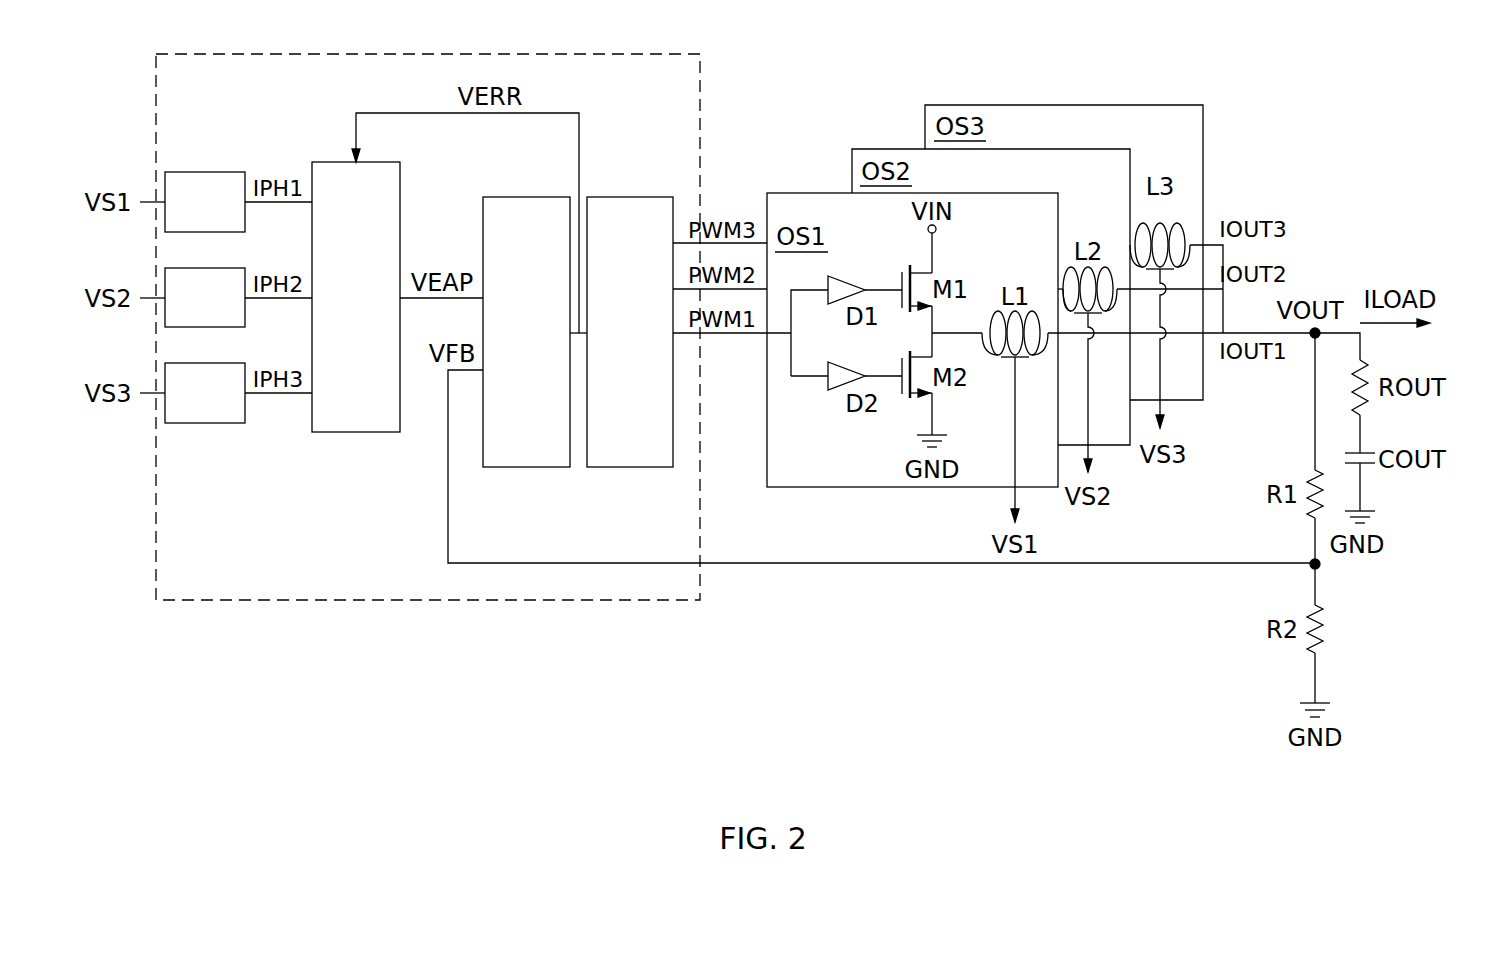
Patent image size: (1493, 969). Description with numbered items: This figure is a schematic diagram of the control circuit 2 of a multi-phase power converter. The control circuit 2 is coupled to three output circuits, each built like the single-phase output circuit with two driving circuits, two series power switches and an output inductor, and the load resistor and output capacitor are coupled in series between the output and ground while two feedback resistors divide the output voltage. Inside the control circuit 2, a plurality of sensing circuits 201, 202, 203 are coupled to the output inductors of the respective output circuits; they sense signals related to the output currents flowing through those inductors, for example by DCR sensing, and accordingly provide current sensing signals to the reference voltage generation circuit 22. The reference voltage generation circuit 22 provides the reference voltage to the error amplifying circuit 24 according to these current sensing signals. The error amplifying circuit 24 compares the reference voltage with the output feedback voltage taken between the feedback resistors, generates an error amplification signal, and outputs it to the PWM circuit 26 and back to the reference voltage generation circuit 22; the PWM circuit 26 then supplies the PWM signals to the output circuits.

The control circuit 2 is at (668, 90).
The sensing circuit 201 is at (186, 218).
The sensing circuit 202 is at (186, 314).
The sensing circuit 203 is at (186, 409).
The reference voltage generation circuit 22 is at (343, 313).
The error amplifying circuit 24 is at (514, 349).
The PWM circuit 26 is at (617, 349).